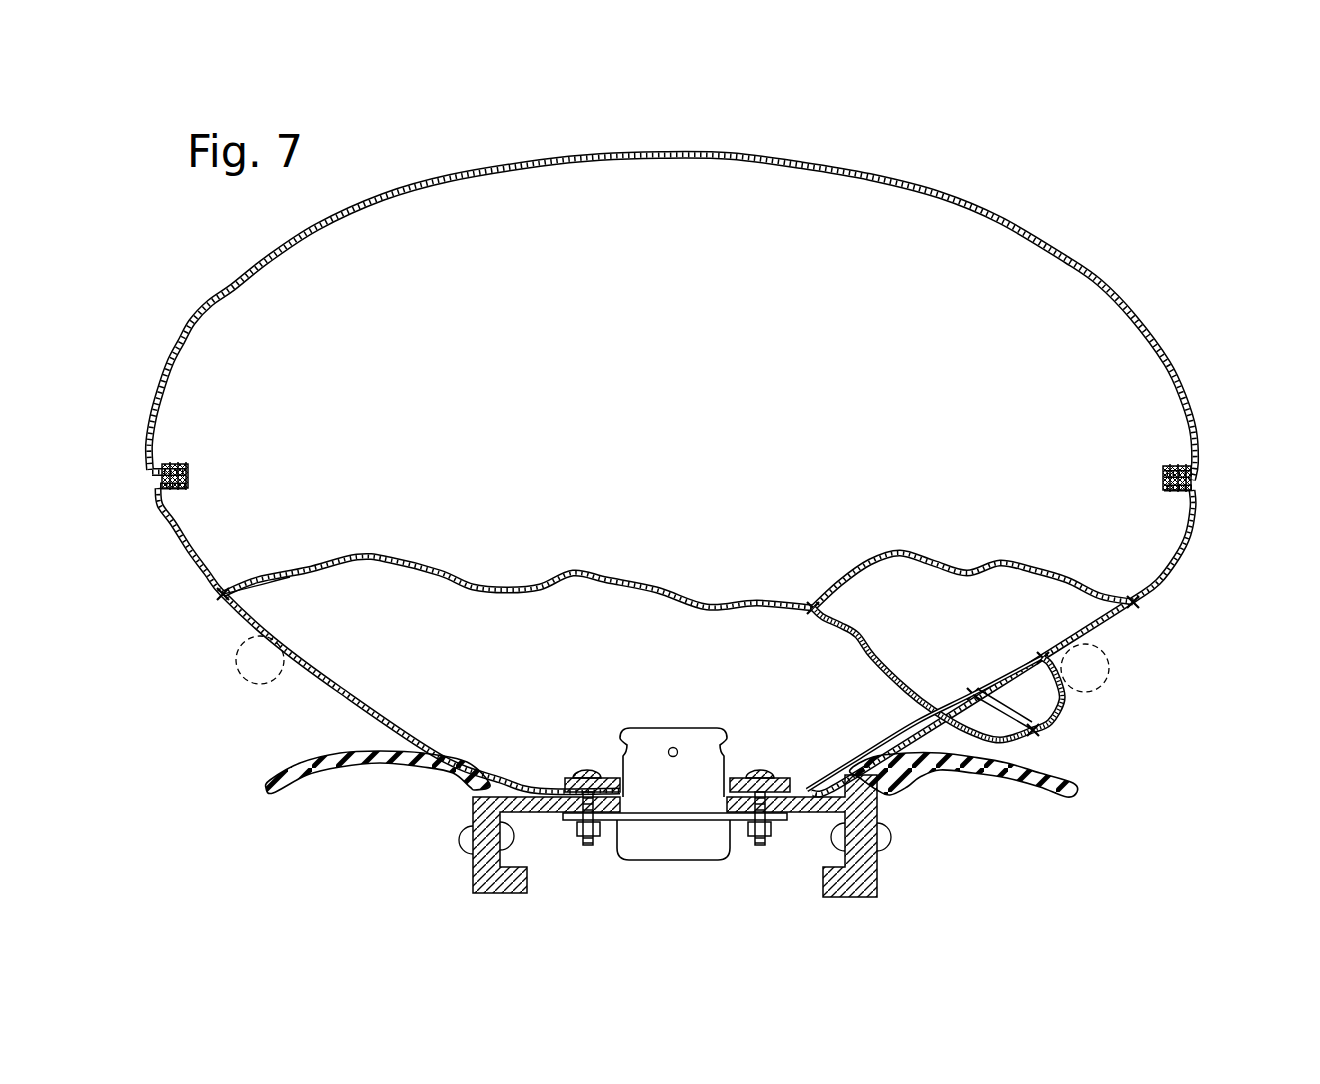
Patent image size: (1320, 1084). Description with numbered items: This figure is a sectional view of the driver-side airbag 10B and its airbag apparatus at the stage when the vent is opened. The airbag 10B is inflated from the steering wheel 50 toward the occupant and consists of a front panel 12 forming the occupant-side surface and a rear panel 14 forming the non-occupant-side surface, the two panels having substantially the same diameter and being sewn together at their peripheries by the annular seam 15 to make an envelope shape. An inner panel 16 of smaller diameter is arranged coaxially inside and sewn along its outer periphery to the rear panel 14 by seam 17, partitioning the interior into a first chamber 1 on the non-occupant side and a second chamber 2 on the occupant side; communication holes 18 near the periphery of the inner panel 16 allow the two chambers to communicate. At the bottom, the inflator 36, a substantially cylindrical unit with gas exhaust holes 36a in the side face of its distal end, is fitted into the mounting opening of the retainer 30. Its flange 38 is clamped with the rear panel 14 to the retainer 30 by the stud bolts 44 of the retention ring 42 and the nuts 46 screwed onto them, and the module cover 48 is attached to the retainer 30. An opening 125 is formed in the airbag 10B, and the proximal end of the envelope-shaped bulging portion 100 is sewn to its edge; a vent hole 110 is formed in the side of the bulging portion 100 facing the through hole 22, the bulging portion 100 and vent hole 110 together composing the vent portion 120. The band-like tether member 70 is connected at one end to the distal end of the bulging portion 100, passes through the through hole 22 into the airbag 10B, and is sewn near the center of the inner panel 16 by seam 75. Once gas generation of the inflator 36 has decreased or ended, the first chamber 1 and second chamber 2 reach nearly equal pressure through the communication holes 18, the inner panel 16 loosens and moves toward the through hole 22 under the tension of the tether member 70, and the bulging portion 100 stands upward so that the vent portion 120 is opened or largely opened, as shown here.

The airbag 10B is at (1040, 196).
The front panel 12 is at (660, 160).
The rear panel 14 is at (352, 690).
The seam 15 is at (176, 464).
The inner panel 16 is at (563, 576).
The seam 17 is at (219, 598).
The communication holes 18 is at (295, 576).
The through hole 22 is at (928, 720).
The retainer 30 is at (880, 804).
The inflator 36 is at (598, 732).
The gas exhaust holes 36a is at (698, 790).
The flange 38 is at (631, 822).
The retention ring 42 is at (743, 778).
The stud bolts 44 is at (589, 847).
The nuts 46 is at (575, 828).
The module cover 48 is at (268, 792).
The steering wheel 50 is at (237, 672).
The tether member 70 is at (860, 633).
The seam 75 is at (813, 604).
The bulging portion 100 is at (1056, 716).
The vent hole 110 is at (1012, 718).
The vent portion 120 is at (1064, 705).
The opening 125 is at (1013, 672).
The first chamber 1 is at (504, 654).
The second chamber 2 is at (492, 350).